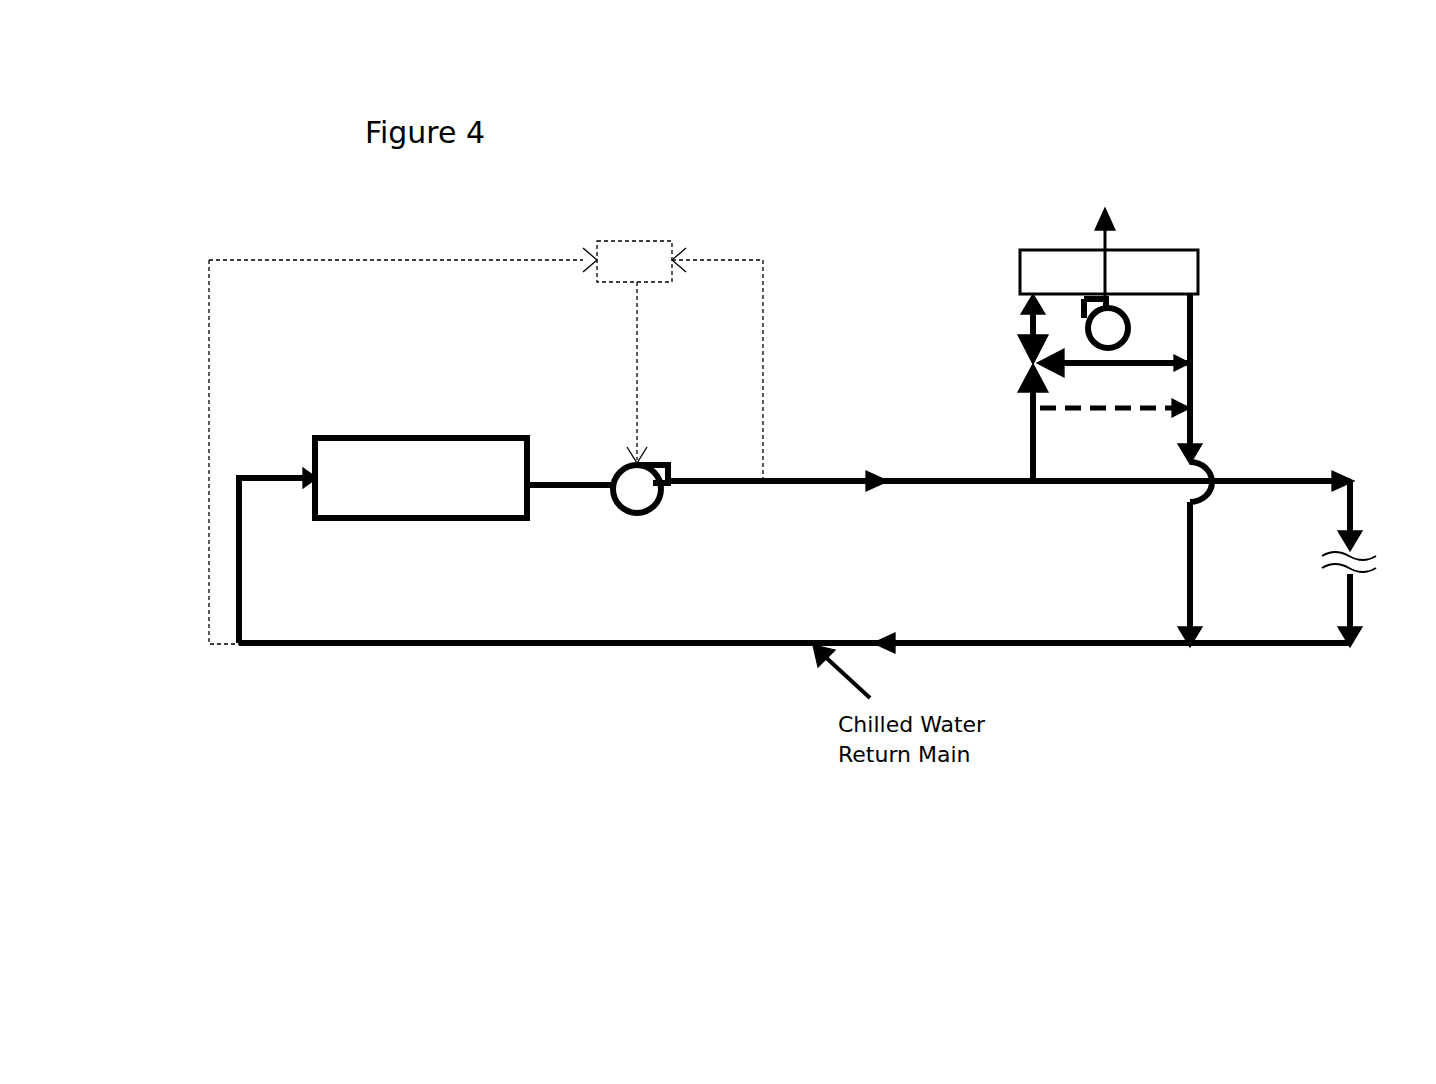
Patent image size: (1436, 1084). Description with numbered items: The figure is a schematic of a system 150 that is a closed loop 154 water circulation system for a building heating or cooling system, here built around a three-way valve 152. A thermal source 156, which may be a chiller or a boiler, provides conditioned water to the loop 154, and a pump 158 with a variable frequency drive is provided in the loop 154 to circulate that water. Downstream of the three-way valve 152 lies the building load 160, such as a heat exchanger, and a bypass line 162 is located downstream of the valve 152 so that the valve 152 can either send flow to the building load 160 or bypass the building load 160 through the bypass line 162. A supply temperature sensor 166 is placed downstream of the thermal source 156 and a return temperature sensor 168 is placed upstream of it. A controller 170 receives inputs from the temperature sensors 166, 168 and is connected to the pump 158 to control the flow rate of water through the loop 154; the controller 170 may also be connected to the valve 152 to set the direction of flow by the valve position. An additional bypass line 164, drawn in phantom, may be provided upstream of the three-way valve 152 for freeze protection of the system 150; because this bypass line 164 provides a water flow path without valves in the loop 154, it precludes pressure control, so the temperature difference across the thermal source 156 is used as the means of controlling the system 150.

The system 150 is at (1285, 328).
The three-way valve 152 is at (1017, 338).
The closed loop 154 is at (403, 646).
The thermal source 156 is at (392, 438).
The pump 158 is at (662, 463).
The building load 160 is at (1122, 255).
The bypass line 162 is at (1133, 366).
The additional bypass line 164 is at (1103, 408).
The supply temperature sensor 166 is at (763, 482).
The return temperature sensor 168 is at (238, 647).
The controller 170 is at (634, 352).